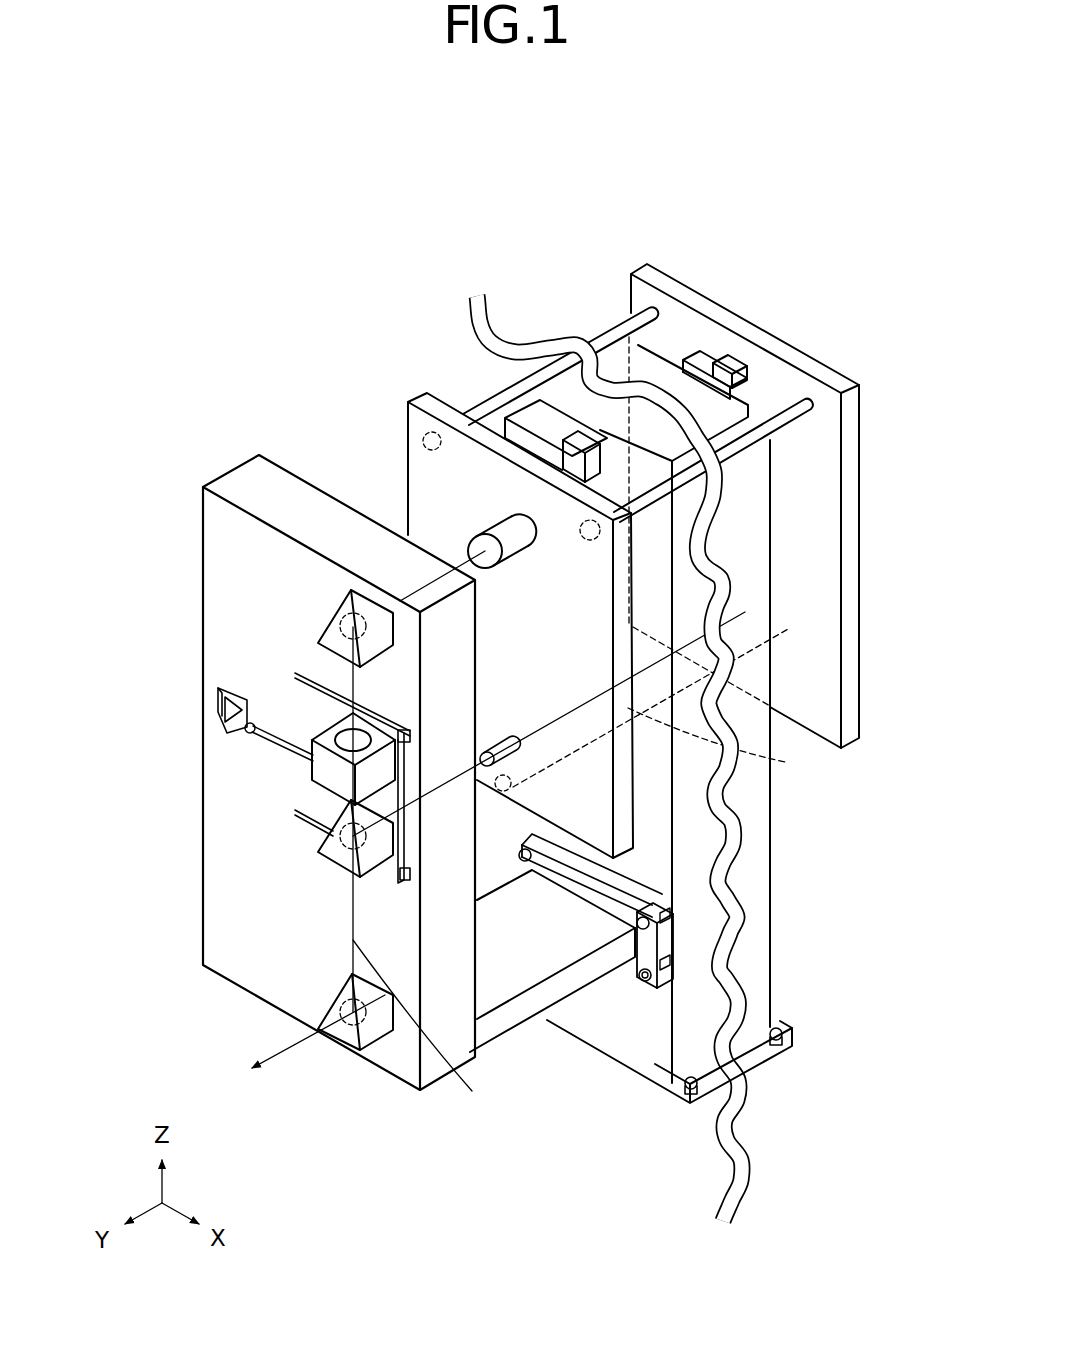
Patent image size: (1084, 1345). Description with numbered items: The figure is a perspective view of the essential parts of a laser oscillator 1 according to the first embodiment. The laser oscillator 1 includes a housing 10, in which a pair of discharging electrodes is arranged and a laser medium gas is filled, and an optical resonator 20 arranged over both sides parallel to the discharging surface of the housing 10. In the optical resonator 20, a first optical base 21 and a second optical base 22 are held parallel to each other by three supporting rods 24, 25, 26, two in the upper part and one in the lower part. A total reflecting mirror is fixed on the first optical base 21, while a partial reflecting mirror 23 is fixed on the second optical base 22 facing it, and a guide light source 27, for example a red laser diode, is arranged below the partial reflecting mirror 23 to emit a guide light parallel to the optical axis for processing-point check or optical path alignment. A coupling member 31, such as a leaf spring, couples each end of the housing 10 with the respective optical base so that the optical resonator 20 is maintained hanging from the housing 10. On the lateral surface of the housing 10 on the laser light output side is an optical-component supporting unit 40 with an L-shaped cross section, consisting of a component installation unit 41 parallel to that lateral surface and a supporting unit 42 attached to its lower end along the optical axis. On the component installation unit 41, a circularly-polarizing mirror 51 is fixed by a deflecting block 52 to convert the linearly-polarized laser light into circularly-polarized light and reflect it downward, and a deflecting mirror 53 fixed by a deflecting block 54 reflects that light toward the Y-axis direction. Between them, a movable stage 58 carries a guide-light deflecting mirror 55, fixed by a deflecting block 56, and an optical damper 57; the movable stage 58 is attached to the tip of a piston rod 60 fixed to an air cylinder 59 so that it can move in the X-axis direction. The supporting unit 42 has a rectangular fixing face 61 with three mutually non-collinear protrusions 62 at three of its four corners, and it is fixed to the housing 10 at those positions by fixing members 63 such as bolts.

The laser oscillator 1 is at (664, 156).
The housing 10 is at (773, 1003).
The optical resonator 20 is at (667, 267).
The first optical base 21 is at (816, 356).
The second optical base 22 is at (408, 478).
The partial reflecting mirror 23 is at (503, 522).
The supporting rod 24 is at (613, 318).
The supporting rod 25 is at (782, 434).
The supporting rod 26 is at (785, 762).
The guide light source 27 is at (507, 781).
The coupling member 31 is at (545, 444).
The optical-component supporting unit 40 is at (221, 477).
The component installation unit 41 is at (203, 645).
The supporting unit 42 is at (493, 1040).
The circularly-polarizing mirror 51 is at (347, 615).
The deflecting block 52 is at (327, 630).
The deflecting mirror 53 is at (330, 1033).
The deflecting block 54 is at (318, 1011).
The guide-light deflecting mirror 55 is at (342, 852).
The deflecting block 56 is at (320, 851).
The optical damper 57 is at (330, 767).
The movable stage 58 is at (393, 870).
The air cylinder 59 is at (243, 718).
The piston rod 60 is at (263, 735).
The rectangular fixing face 61 is at (658, 983).
The protrusions 62 is at (667, 987).
The fixing members 63 is at (643, 977).